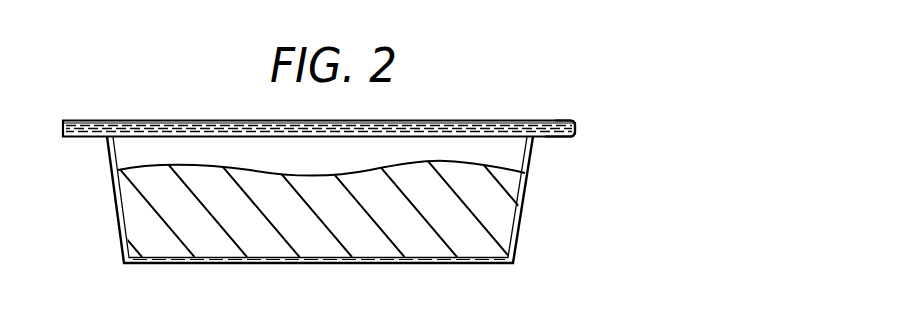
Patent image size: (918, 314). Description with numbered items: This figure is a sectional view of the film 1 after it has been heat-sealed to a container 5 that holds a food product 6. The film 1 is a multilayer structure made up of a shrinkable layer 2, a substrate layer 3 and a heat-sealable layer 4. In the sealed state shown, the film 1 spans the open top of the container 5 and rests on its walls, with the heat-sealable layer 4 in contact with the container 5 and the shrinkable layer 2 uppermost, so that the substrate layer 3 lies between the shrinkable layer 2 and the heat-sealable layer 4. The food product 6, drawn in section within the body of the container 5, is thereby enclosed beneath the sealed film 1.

The film 1 is at (452, 112).
The shrinkable layer 2 is at (567, 121).
The substrate layer 3 is at (577, 123).
The heat-sealable layer 4 is at (575, 137).
The container 5 is at (525, 215).
The food product 6 is at (147, 232).